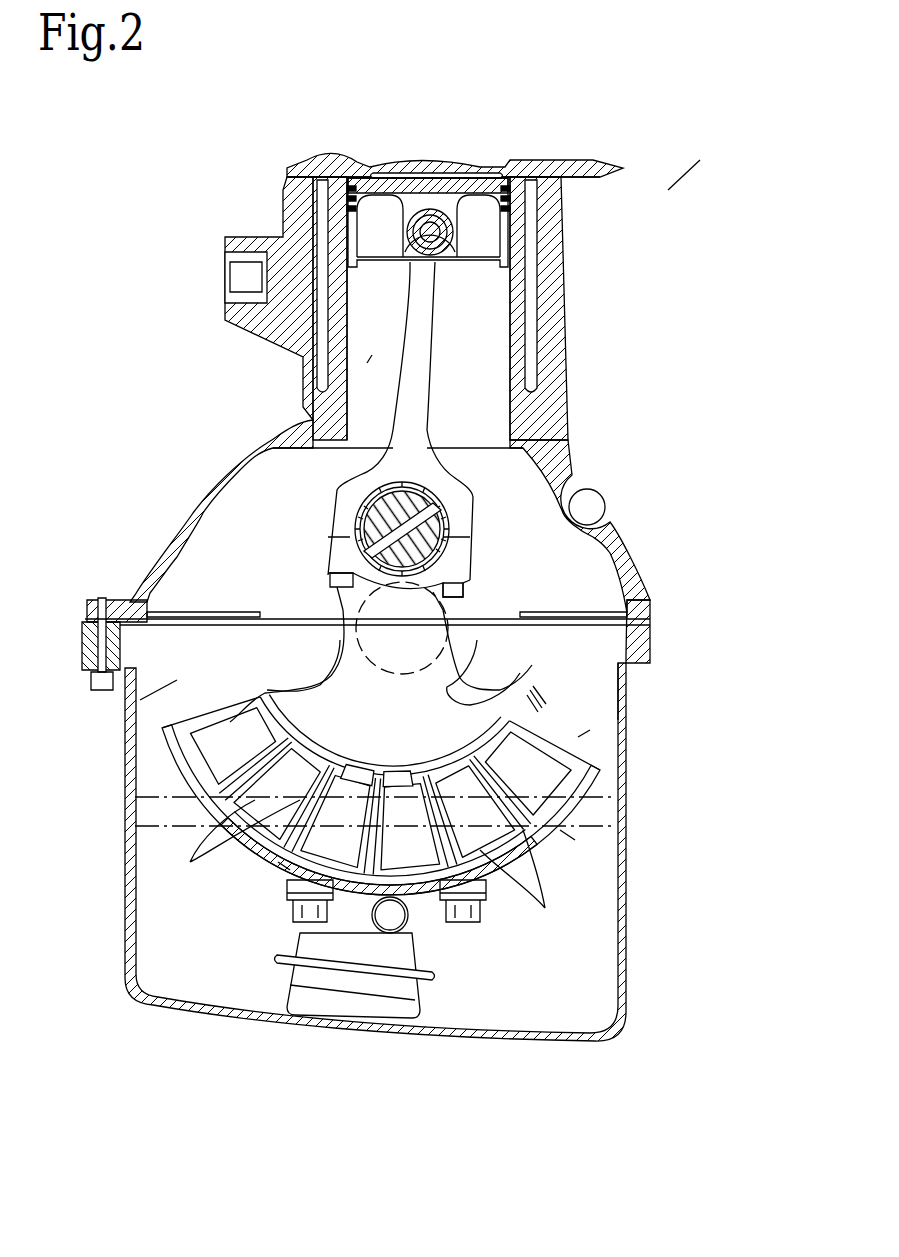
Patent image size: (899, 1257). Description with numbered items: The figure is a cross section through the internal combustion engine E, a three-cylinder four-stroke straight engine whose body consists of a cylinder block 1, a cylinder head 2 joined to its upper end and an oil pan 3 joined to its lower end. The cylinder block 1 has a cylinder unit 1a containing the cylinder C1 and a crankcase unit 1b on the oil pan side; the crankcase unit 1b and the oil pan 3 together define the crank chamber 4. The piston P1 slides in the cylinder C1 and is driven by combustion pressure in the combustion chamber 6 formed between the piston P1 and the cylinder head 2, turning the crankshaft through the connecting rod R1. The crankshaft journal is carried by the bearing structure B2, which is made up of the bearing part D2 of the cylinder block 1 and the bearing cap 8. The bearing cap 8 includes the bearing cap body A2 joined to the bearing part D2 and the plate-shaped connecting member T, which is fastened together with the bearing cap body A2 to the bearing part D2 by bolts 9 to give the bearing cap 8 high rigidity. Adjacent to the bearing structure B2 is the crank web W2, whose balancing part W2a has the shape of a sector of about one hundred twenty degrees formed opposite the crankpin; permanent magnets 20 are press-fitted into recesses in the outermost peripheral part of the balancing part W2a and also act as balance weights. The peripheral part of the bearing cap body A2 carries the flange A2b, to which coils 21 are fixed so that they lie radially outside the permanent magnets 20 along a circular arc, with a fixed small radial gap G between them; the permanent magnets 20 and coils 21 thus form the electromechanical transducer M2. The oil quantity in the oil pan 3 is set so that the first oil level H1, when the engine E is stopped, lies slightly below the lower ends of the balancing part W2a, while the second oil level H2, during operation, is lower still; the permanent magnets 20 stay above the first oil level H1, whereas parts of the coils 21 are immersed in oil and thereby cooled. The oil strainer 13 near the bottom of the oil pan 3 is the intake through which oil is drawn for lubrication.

The cylinder block 1 is at (616, 450).
The cylinder unit 1a is at (557, 357).
The crankcase unit 1b is at (617, 548).
The cylinder head 2 is at (575, 153).
The oil pan 3 is at (630, 888).
The crank chamber 4 is at (608, 708).
The combustion chamber 6 is at (443, 170).
The bearing cap 8 is at (160, 770).
The bolt 9 is at (462, 928).
The oil strainer 13 is at (332, 1025).
The permanent magnet 20 is at (418, 772).
The coil 21 is at (374, 866).
The internal combustion engine E is at (668, 190).
The piston P1 is at (373, 170).
The connecting rod R1 is at (418, 371).
The cylinder C1 is at (367, 363).
The bearing part D2 is at (303, 578).
The crank web W2 is at (462, 667).
The balancing part W2a is at (476, 708).
The bearing cap body A2 is at (327, 668).
The flange A2b is at (560, 830).
The gap G is at (531, 698).
The bearing structure B2 is at (177, 680).
The electromechanical transducer M2 is at (578, 737).
The first oil level H1 is at (615, 797).
The second oil level H2 is at (615, 822).
The connecting member T is at (278, 862).